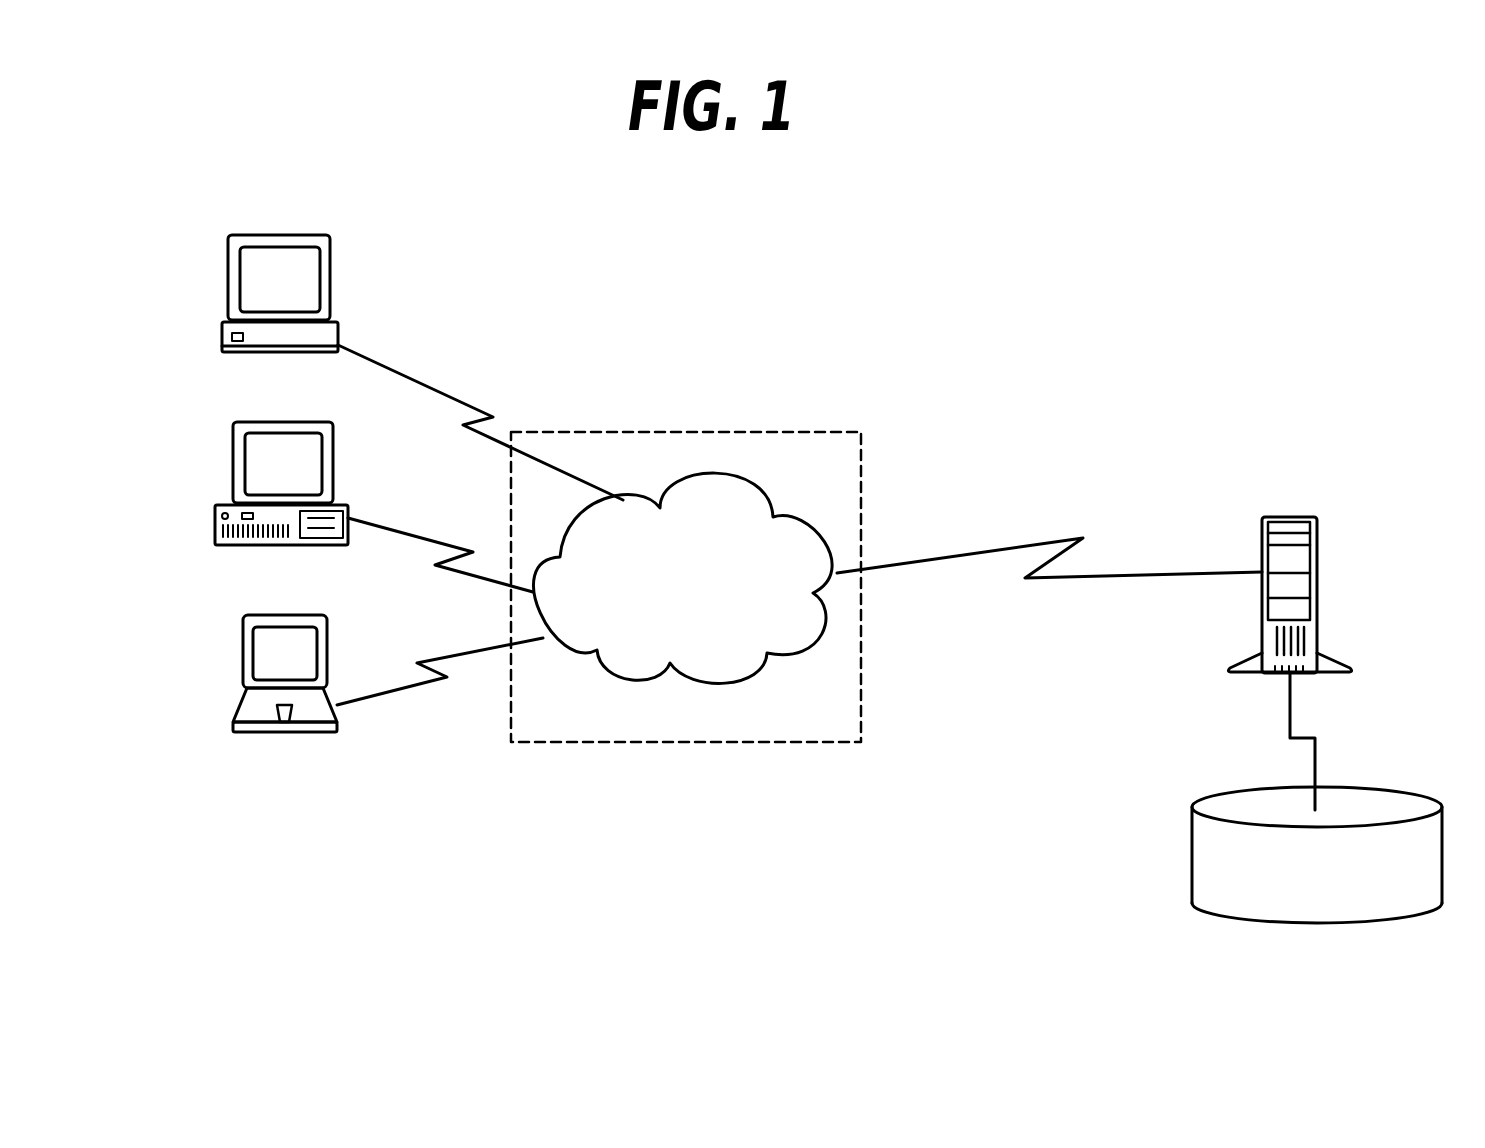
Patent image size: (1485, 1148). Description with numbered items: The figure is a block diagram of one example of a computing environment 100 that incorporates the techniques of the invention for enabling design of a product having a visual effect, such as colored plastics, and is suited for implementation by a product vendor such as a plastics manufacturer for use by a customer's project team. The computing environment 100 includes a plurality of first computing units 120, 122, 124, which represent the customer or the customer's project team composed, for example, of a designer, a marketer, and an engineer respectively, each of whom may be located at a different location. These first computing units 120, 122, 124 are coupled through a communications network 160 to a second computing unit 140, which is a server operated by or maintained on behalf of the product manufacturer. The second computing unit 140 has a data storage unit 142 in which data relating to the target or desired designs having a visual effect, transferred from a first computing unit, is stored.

The computing environment 100 is at (1050, 267).
The first computing unit 120 is at (228, 280).
The first computing unit 122 is at (232, 465).
The first computing unit 124 is at (243, 655).
The second computing unit 140 is at (1363, 510).
The data storage unit 142 is at (1238, 803).
The communications network 160 is at (757, 408).